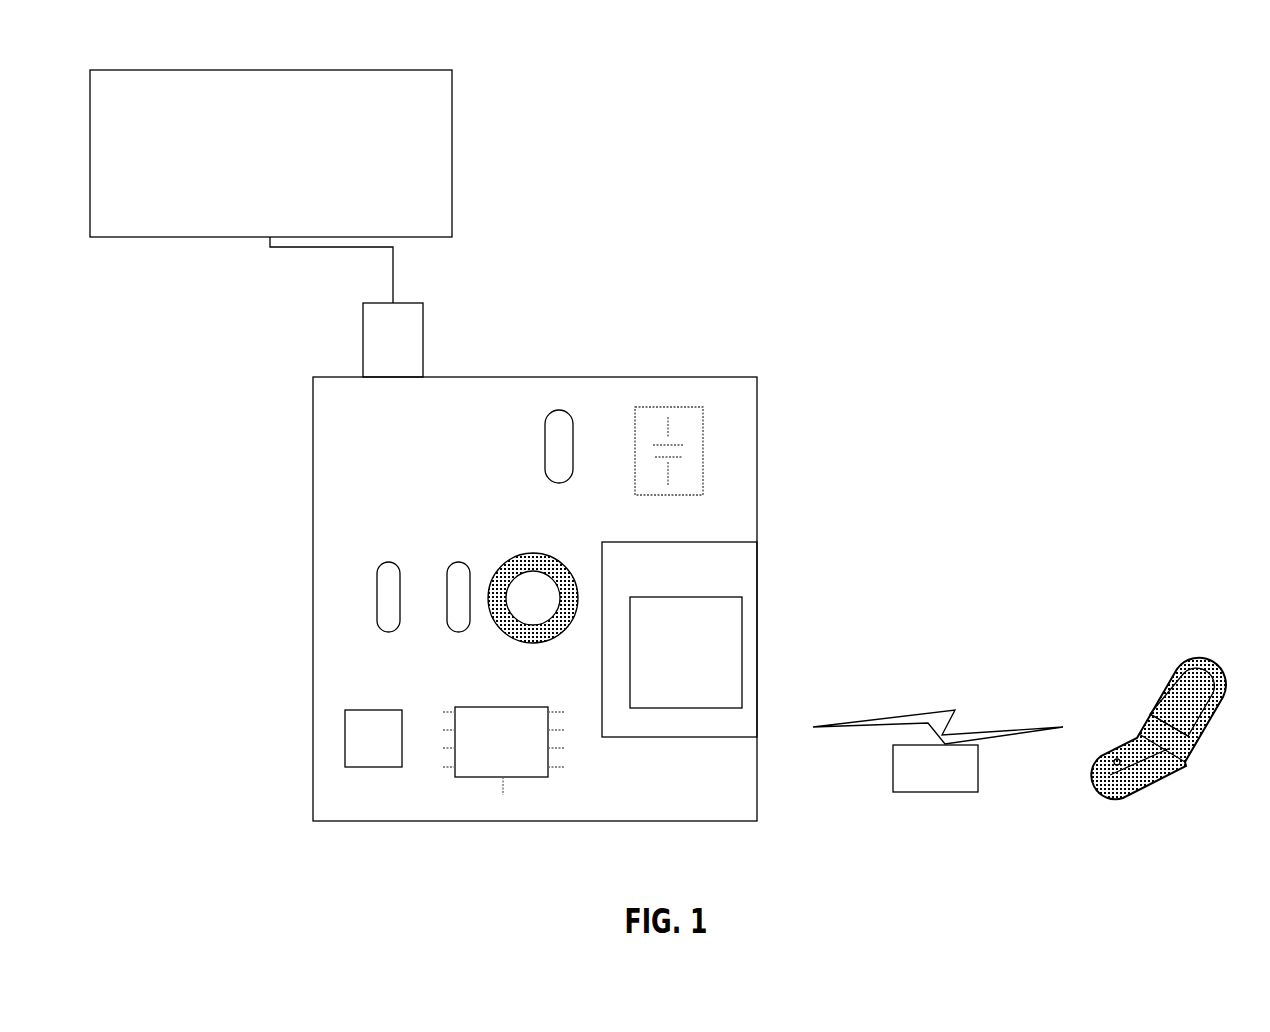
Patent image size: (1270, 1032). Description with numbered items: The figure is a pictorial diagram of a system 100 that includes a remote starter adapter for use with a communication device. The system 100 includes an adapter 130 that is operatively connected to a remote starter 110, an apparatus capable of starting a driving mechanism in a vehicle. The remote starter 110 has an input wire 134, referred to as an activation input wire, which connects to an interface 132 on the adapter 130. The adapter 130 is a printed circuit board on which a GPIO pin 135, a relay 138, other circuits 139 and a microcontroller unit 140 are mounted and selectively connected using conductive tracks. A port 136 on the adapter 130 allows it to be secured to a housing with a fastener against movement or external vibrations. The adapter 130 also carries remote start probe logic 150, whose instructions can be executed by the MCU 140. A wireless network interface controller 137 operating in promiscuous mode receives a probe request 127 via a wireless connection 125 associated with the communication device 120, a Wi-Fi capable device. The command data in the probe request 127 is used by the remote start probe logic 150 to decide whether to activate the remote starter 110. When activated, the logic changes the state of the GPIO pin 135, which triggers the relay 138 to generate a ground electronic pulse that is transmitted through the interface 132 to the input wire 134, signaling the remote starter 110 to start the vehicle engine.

The system 100 is at (1077, 68).
The remote starter 110 is at (452, 152).
The communication device 120 is at (1180, 660).
The wireless connection 125 is at (942, 708).
The probe request 127 is at (951, 781).
The adapter 130 is at (757, 427).
The interface 132 is at (425, 357).
The input wire 134 is at (395, 280).
The GPIO pin 135 is at (560, 410).
The port 136 is at (537, 555).
The wireless network interface controller 137 is at (477, 777).
The relay 138 is at (702, 413).
The other circuits 139 is at (447, 625).
The microcontroller unit 140 is at (728, 575).
The remote start probe logic 150 is at (728, 682).